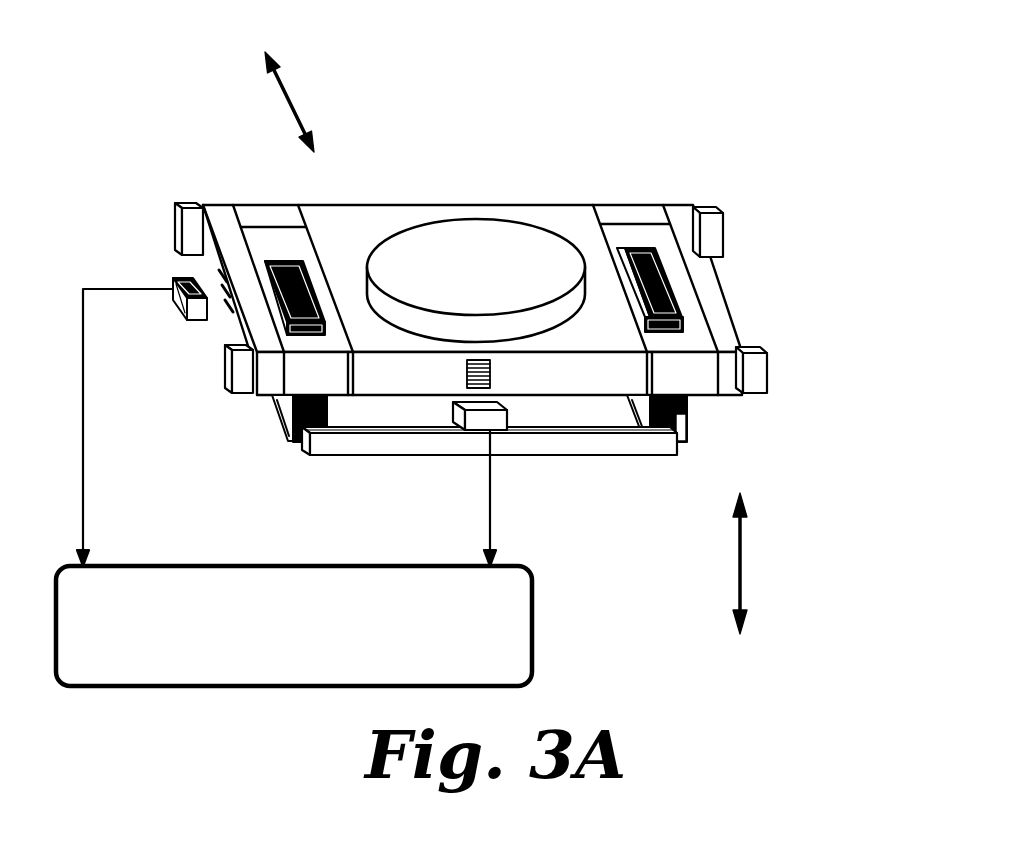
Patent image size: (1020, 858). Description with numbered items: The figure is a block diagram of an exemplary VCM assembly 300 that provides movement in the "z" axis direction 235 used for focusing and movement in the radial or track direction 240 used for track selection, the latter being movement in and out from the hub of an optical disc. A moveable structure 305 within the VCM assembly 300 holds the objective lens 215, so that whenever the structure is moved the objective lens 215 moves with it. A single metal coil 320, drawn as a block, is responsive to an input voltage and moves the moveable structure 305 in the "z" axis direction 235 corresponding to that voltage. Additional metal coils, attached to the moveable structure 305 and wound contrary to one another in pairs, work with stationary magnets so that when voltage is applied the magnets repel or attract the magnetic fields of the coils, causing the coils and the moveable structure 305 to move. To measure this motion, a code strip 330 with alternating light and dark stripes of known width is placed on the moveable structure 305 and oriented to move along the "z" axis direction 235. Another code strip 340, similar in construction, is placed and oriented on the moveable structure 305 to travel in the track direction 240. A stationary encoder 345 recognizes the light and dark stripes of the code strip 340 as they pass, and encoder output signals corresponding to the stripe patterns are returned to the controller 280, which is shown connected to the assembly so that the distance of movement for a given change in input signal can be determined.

The VCM assembly 300 is at (498, 76).
The moveable structure 305 is at (382, 205).
The objective lens 215 is at (476, 280).
The radial direction 240 is at (275, 97).
The z axis direction 235 is at (737, 548).
The controller 280 is at (294, 626).
The metal coil 320 is at (444, 452).
The code strip 330 is at (467, 378).
The code strip 340 is at (213, 275).
The encoder 345 is at (182, 306).